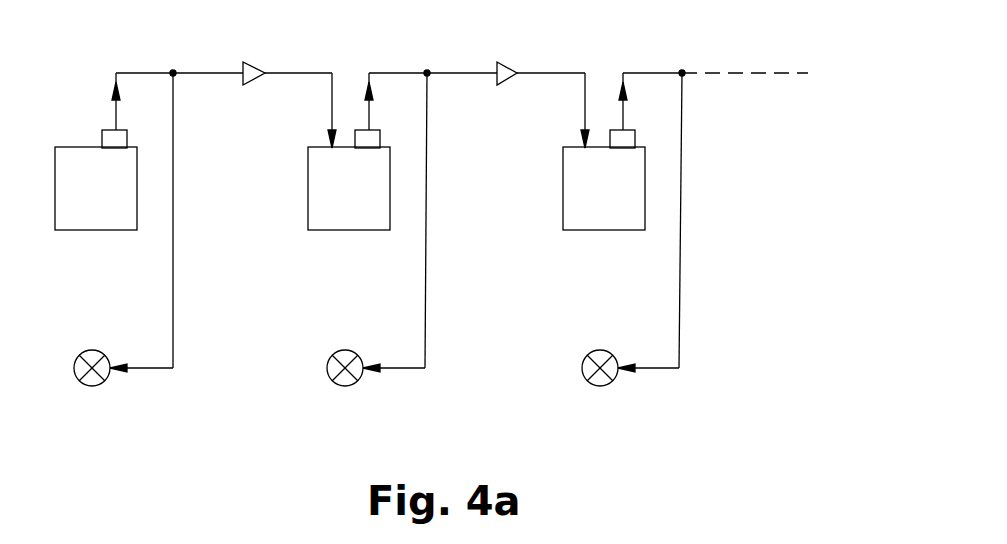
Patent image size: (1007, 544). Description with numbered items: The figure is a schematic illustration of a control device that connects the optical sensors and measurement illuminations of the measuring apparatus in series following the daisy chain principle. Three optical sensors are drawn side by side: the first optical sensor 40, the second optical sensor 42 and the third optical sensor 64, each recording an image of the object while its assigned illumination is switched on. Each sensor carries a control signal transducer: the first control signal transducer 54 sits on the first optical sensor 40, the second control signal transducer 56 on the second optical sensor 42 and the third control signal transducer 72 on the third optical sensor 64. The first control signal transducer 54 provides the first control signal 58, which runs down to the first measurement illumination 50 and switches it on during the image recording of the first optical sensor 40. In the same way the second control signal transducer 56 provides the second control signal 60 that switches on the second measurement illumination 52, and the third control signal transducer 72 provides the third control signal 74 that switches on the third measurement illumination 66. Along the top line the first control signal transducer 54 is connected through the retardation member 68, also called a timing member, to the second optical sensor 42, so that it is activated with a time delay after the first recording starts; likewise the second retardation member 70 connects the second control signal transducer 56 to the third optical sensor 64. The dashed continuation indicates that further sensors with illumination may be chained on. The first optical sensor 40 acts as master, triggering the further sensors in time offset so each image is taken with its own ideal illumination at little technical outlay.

The first optical sensor 40 is at (93, 217).
The second optical sensor 42 is at (350, 217).
The third optical sensor 64 is at (603, 217).
The first measurement illumination 50 is at (92, 386).
The second measurement illumination 52 is at (345, 386).
The third measurement illumination 66 is at (600, 386).
The first control signal transducer 54 is at (125, 132).
The second control signal transducer 56 is at (379, 132).
The third control signal transducer 72 is at (634, 132).
The first control signal 58 is at (173, 302).
The second control signal 60 is at (425, 302).
The third control signal 74 is at (679, 302).
The retardation member 68 is at (252, 62).
The second retardation member 70 is at (506, 62).